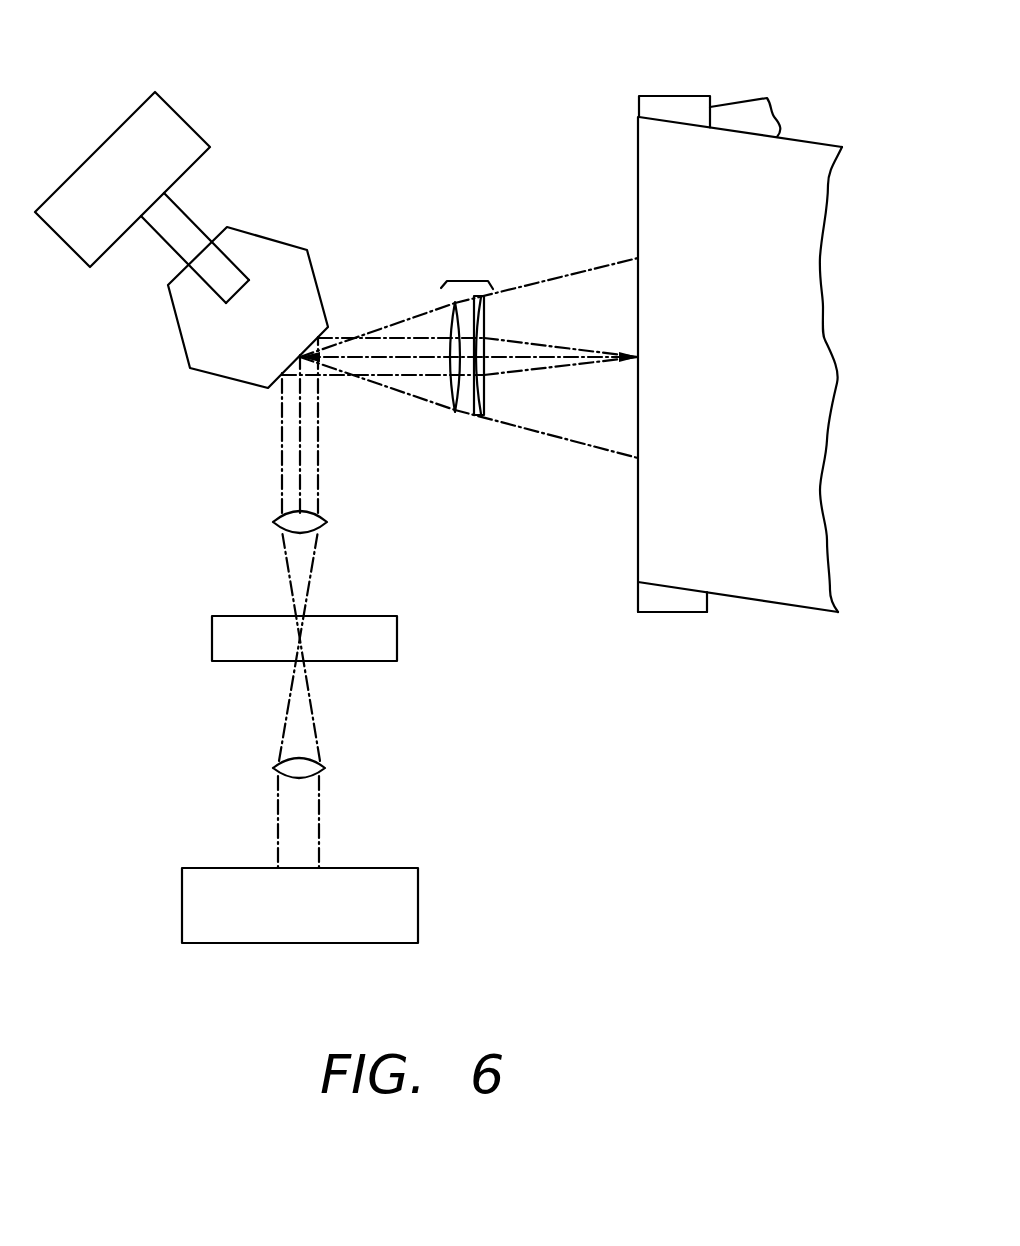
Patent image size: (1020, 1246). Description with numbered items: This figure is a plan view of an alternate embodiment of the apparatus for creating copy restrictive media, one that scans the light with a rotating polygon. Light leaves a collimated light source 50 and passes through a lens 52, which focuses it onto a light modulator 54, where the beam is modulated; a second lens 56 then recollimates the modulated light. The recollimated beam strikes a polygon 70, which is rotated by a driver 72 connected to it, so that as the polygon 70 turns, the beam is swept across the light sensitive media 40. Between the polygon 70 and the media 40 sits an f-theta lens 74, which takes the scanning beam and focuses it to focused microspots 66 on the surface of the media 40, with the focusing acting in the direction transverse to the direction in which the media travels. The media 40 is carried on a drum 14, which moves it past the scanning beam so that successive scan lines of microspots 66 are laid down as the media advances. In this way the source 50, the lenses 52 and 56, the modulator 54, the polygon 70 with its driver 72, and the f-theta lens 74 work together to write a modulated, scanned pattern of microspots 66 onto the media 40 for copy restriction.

The drum 14 is at (672, 98).
The light sensitive media 40 is at (758, 400).
The collimated light source 50 is at (377, 868).
The lens 52 is at (322, 762).
The modulator 54 is at (377, 617).
The lens 56 is at (322, 520).
The focused microspots 66 is at (640, 283).
The polygon 70 is at (263, 233).
The driver 72 is at (112, 132).
The f-theta lens 74 is at (465, 281).